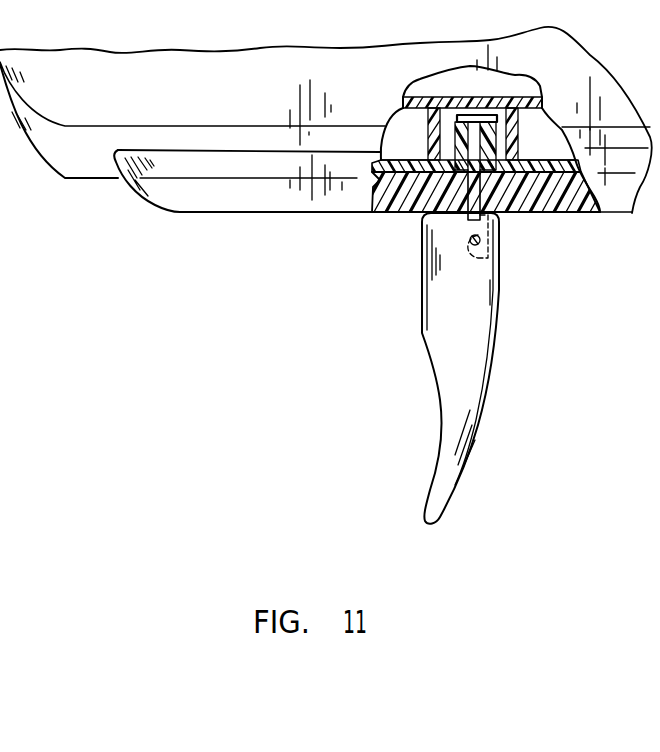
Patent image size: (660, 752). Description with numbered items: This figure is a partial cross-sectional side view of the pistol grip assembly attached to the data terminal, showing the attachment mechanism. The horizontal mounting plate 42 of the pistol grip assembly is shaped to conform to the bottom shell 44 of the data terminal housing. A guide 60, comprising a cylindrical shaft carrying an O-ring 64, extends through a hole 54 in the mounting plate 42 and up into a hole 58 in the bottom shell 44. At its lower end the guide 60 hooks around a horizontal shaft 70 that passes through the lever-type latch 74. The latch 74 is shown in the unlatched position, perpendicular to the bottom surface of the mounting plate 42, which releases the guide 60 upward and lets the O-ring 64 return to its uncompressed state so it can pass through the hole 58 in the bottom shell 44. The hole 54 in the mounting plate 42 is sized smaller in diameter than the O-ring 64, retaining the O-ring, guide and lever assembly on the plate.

The bottom shell 44 is at (89, 162).
The horizontal mounting plate 42 is at (240, 205).
The O-ring 64 is at (437, 140).
The hole 58 is at (460, 186).
The hole 54 is at (447, 196).
The guide 60 is at (485, 196).
The horizontal shaft 70 is at (478, 239).
The lever-type latch 74 is at (472, 352).